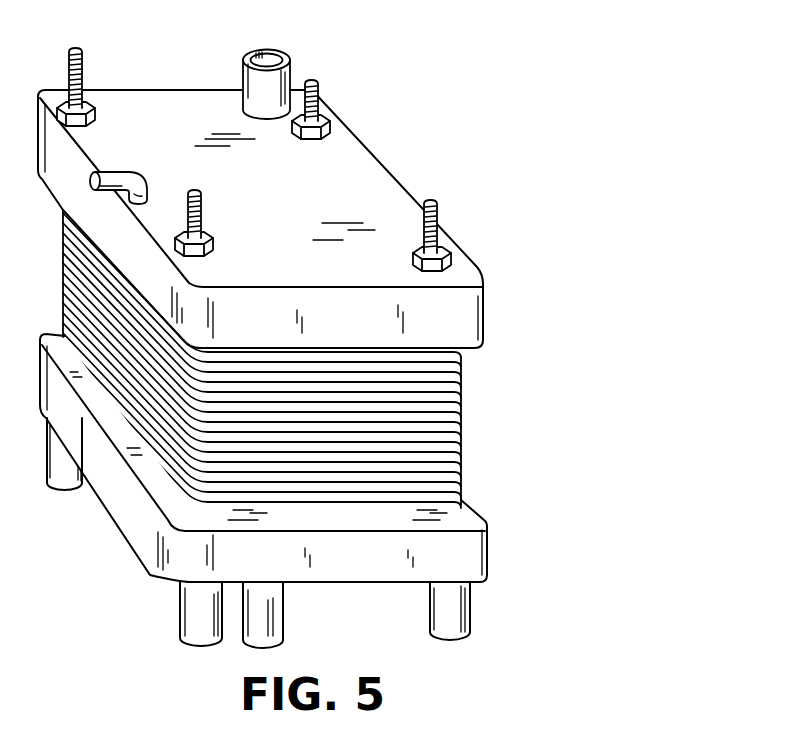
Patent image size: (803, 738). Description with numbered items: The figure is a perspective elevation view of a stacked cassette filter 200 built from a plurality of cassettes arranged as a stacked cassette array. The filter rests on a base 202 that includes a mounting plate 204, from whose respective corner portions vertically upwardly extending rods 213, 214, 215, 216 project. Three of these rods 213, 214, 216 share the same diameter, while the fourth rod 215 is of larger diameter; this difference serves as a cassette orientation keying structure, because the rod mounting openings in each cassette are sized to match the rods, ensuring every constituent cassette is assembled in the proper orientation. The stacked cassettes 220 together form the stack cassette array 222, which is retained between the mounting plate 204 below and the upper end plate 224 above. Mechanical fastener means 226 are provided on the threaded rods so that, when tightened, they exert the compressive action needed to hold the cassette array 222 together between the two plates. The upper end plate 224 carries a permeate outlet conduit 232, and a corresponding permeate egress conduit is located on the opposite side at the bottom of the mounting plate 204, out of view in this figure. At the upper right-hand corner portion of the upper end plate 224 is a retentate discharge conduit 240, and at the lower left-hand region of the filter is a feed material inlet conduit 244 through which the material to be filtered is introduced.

The stacked cassette filter 200 is at (470, 149).
The base 202 is at (512, 522).
The mounting plate 204 is at (473, 553).
The rod 213 is at (438, 218).
The rod 214 is at (313, 103).
The rod 215 is at (85, 73).
The rod 216 is at (197, 214).
The stacked cassettes 220 is at (430, 428).
The stack cassette array 222 is at (456, 388).
The upper end plate 224 is at (467, 310).
The mechanical fastener means 226 is at (337, 136).
The permeate outlet conduit 232 is at (130, 173).
The retentate discharge conduit 240 is at (256, 87).
The feed material inlet conduit 244 is at (282, 614).